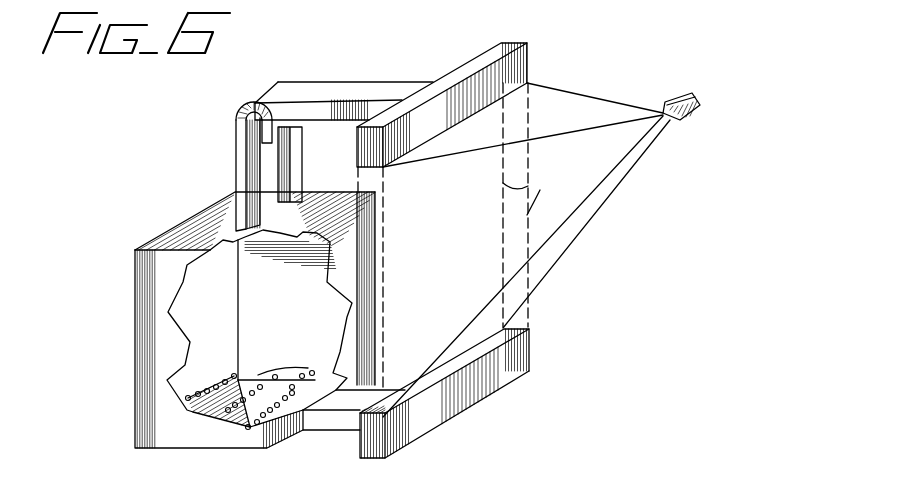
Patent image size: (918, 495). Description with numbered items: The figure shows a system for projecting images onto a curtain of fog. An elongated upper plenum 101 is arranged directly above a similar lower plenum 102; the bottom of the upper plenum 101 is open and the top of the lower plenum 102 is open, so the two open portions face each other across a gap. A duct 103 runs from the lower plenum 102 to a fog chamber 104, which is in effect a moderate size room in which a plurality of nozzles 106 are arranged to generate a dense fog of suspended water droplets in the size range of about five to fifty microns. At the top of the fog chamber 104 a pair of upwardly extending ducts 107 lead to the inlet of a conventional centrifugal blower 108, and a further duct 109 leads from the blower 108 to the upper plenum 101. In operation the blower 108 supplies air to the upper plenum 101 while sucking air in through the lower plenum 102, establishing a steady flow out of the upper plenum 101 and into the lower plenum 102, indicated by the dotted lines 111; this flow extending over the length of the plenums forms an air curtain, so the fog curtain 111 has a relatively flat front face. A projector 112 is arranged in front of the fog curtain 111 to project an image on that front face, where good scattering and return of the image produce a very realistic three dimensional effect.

The upper plenum 101 is at (527, 63).
The lower plenum 102 is at (497, 390).
The duct 103 is at (337, 428).
The fog chamber 104 is at (238, 448).
The nozzles 106 is at (256, 365).
The upwardly extending ducts 107 is at (302, 148).
The centrifugal blower 108 is at (247, 103).
The duct 109 is at (347, 82).
The fog curtain 111 is at (528, 186).
The projector 112 is at (678, 121).